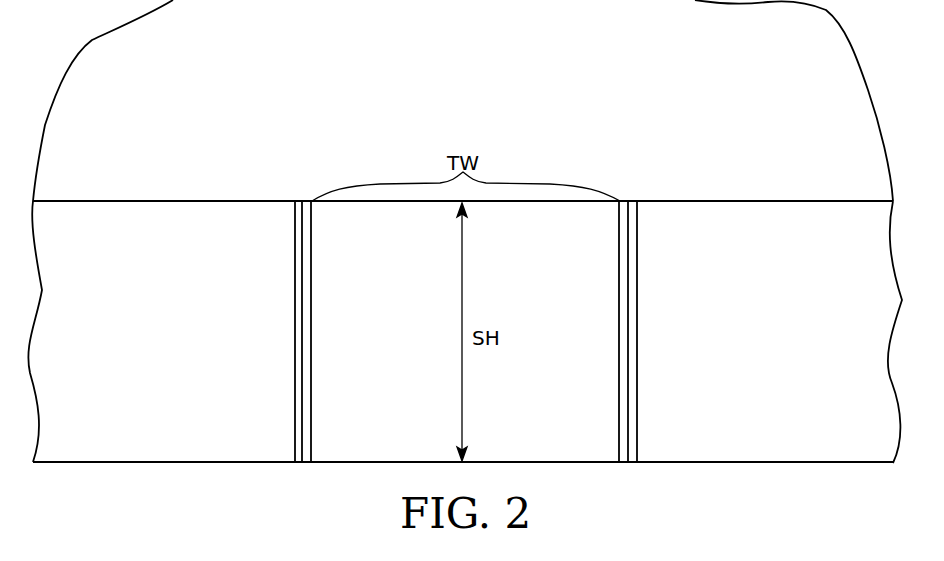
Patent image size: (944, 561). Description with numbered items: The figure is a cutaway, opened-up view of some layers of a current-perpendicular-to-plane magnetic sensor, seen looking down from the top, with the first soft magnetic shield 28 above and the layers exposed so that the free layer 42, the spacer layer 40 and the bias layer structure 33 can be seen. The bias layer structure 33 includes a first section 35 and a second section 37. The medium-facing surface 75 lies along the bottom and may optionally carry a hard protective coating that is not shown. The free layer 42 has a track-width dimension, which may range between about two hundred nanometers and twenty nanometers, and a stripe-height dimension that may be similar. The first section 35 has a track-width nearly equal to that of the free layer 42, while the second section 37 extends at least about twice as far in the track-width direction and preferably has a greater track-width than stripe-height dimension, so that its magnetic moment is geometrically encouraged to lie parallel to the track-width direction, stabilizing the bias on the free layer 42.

The first soft magnetic shield 28 is at (478, 106).
The ferromagnetic bias layer structure 33 is at (292, 200).
The first section 35 is at (294, 393).
The second section 37 is at (164, 200).
The spacer layer 40 is at (302, 332).
The soft magnetic free layer 42 is at (303, 270).
The medium-facing surface 75 is at (603, 464).